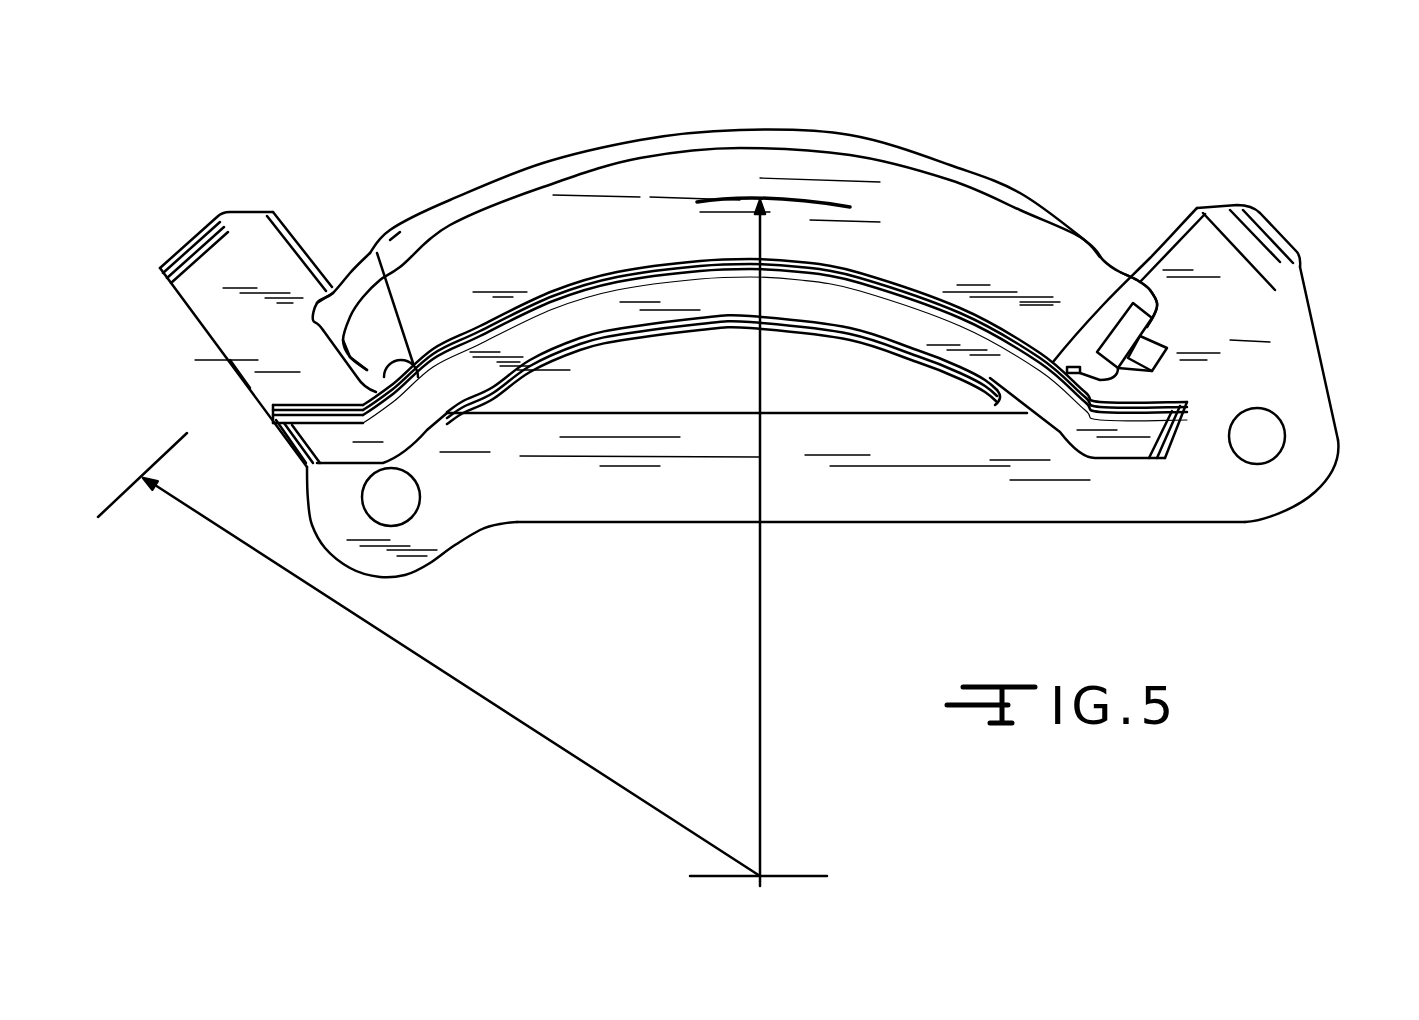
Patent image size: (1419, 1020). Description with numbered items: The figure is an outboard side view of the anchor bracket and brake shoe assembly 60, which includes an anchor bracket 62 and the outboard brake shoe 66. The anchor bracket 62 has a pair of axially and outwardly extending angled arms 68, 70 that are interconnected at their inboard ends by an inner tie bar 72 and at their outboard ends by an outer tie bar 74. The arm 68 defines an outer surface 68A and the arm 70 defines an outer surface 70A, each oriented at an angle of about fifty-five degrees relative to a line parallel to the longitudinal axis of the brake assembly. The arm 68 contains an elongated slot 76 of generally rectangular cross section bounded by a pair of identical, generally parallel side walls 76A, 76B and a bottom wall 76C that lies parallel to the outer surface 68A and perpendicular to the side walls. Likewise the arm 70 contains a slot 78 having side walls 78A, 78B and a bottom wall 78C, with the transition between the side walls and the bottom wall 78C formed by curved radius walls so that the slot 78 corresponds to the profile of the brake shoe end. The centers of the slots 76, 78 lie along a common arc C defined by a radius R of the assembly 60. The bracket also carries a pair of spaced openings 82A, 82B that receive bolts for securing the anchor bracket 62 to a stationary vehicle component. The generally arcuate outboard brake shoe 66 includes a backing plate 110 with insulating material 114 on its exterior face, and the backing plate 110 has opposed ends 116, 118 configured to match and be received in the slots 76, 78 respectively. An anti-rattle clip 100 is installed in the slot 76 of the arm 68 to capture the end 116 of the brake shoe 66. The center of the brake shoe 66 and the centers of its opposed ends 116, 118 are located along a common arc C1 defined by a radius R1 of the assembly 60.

The anchor bracket and brake shoe assembly 60 is at (1079, 92).
The anchor bracket 62 is at (225, 395).
The outboard brake shoe 66 is at (781, 196).
The arm 68 is at (1270, 308).
The outer surface 68A is at (1177, 227).
The arm 70 is at (228, 323).
The outer surface 70A is at (294, 228).
The inner tie bar 72 is at (822, 525).
The outer tie bar 74 is at (688, 305).
The slot 76 is at (1121, 401).
The side wall 76A is at (1155, 299).
The side wall 76B is at (1125, 372).
The bottom wall 76C is at (1140, 326).
The slot 78 is at (372, 250).
The side wall 78A is at (338, 309).
The side wall 78B is at (430, 353).
The bottom wall 78C is at (358, 340).
The opening 82A is at (1255, 458).
The opening 82B is at (405, 518).
The anti-rattle clip 100 is at (1163, 362).
The backing plate 110 is at (948, 172).
The insulating material 114 is at (840, 175).
The end 116 is at (1113, 295).
The end 118 is at (395, 272).
The common arc C is at (130, 477).
The common arc C1 is at (750, 197).
The radius R is at (437, 668).
The radius R1 is at (761, 630).